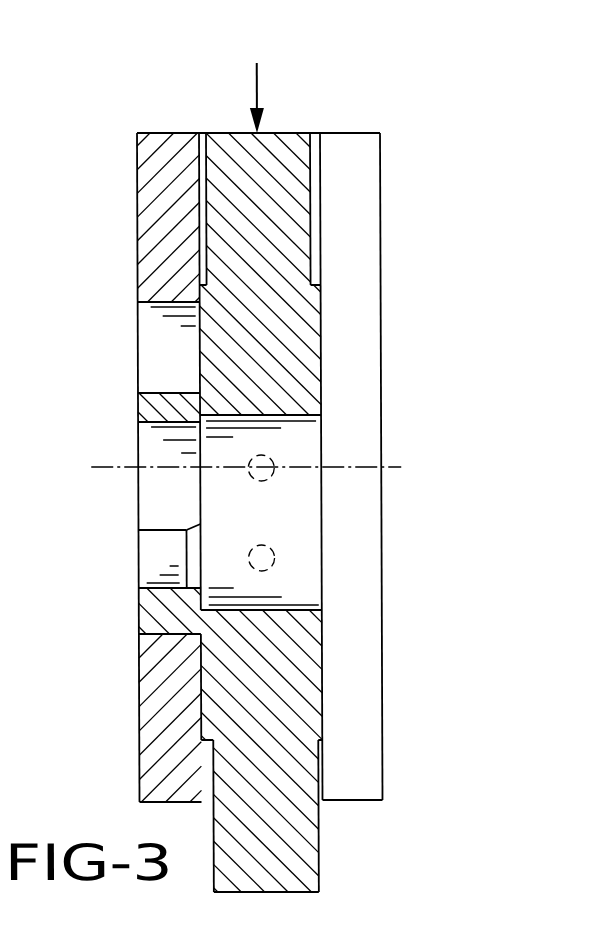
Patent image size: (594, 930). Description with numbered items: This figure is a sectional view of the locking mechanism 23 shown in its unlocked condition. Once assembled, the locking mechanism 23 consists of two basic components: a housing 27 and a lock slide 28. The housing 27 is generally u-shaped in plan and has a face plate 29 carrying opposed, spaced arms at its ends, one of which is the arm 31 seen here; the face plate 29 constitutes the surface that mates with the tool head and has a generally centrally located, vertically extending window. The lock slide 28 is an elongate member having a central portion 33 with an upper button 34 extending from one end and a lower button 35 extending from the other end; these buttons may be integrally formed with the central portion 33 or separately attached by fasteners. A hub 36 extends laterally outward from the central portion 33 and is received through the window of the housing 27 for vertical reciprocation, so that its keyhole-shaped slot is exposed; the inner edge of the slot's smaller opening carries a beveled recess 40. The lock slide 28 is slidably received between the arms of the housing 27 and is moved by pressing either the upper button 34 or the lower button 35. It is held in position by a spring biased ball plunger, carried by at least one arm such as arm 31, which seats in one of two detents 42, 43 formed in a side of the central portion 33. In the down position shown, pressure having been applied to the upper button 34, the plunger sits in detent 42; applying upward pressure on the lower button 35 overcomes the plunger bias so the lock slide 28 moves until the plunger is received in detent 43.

The locking mechanism 23 is at (405, 140).
The housing 27 is at (357, 128).
The lock slide 28 is at (316, 262).
The face plate 29 is at (168, 214).
The arm 31 is at (362, 345).
The central portion 33 is at (302, 437).
The upper button 34 is at (235, 150).
The lower button 35 is at (298, 838).
The hub 36 is at (167, 399).
The beveled recess 40 is at (195, 553).
The detent 42 is at (270, 478).
The detent 43 is at (271, 564).